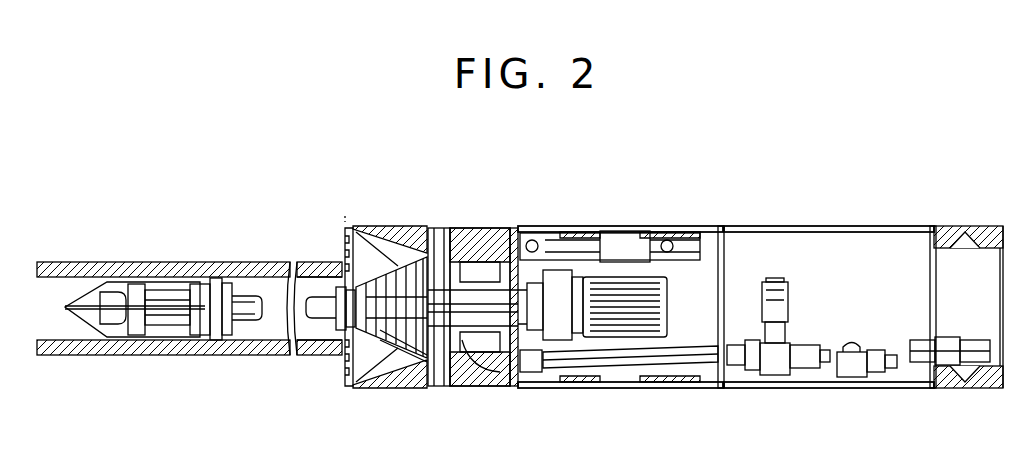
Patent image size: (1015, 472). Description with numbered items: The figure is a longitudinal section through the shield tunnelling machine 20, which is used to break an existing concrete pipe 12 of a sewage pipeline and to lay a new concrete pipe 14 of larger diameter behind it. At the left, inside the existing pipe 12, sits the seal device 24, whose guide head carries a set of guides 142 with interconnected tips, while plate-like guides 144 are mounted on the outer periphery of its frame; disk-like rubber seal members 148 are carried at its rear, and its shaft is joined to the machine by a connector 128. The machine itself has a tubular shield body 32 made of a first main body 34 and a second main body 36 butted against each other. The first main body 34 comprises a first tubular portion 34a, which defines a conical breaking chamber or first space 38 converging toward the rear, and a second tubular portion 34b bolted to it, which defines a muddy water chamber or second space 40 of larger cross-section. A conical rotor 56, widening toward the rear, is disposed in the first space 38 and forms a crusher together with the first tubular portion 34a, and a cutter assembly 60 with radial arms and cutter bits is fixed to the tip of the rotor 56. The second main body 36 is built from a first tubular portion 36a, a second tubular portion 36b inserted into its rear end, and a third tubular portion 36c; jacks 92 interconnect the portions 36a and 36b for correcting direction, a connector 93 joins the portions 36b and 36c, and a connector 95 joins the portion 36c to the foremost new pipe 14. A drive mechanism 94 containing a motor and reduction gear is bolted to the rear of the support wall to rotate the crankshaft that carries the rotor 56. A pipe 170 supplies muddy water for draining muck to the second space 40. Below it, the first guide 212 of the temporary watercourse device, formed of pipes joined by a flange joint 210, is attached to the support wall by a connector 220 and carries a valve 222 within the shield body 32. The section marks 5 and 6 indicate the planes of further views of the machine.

The existing concrete pipe 12 is at (257, 262).
The seal device 24 is at (167, 308).
The guides 142 is at (90, 325).
The plate-like guides 144 is at (155, 333).
The seal members 148 is at (226, 335).
The connector 128 is at (250, 322).
The cutter assembly 60 is at (342, 386).
The section line 5- 5 is at (345, 214).
The first space 38 is at (370, 234).
The first tubular portion 34a is at (402, 227).
The rotor 56 is at (438, 366).
The second space 40 is at (443, 240).
The first main body 34 is at (432, 227).
The second tubular portion 34b is at (479, 228).
The shield body 32 is at (513, 228).
The second main body 36 is at (760, 296).
The first tubular portion 36a is at (568, 226).
The second tubular portion 36b is at (653, 226).
The third tubular portion 36c is at (845, 228).
The connector 93 is at (722, 228).
The connector 95 is at (931, 228).
The new concrete pipe 14 is at (993, 383).
The shield tunnelling machine 20 is at (788, 192).
The section line 6- 6 is at (963, 221).
The jacks 92 is at (625, 238).
The drive mechanism 94 is at (658, 291).
The first guide 212 is at (629, 363).
The connector 220 is at (529, 374).
The valve 222 is at (790, 300).
The pipe 170 is at (893, 379).
The flange joint 210 is at (950, 340).